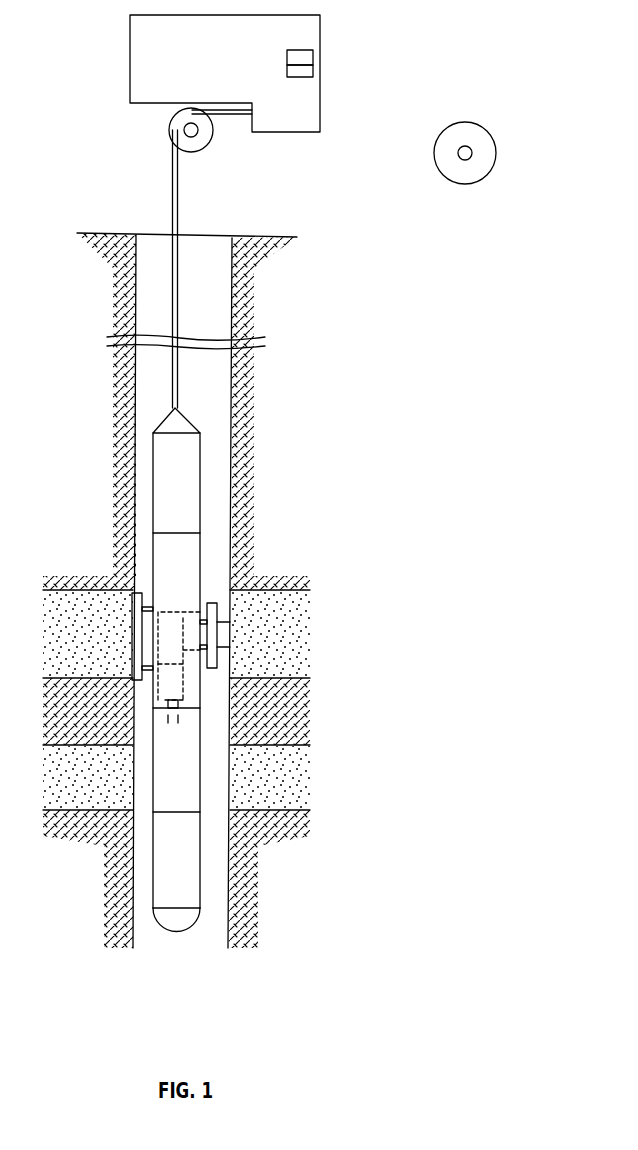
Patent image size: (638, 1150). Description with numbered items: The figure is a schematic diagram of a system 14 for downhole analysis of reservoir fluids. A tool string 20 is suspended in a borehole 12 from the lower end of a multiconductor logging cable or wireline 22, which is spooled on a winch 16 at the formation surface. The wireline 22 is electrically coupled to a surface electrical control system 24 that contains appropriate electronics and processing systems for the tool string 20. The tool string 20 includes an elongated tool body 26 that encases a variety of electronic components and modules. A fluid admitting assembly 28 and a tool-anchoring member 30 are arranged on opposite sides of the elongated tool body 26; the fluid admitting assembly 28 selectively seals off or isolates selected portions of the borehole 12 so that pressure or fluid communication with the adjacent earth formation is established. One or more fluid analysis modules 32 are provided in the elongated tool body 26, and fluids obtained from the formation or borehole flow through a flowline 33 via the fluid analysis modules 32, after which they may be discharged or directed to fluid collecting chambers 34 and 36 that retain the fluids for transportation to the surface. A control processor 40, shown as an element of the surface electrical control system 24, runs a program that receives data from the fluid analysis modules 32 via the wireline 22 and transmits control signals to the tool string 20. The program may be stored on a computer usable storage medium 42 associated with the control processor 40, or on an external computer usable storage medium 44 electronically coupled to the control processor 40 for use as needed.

The borehole 12 is at (231, 300).
The system 14 is at (152, 381).
The winch 16 is at (170, 130).
The tool string 20 is at (208, 497).
The wireline 22 is at (171, 172).
The surface electrical control system 24 is at (286, 134).
The elongated tool body 26 is at (201, 445).
The fluid admitting assembly 28 is at (217, 612).
The tool-anchoring member 30 is at (141, 632).
The fluid analysis module 32 is at (178, 688).
The flowline 33 is at (164, 719).
The fluid collecting chamber 34 is at (190, 776).
The fluid collecting chamber 36 is at (192, 866).
The control processor 40 is at (305, 57).
The computer usable storage medium 42 is at (300, 68).
The external computer usable storage medium 44 is at (496, 146).